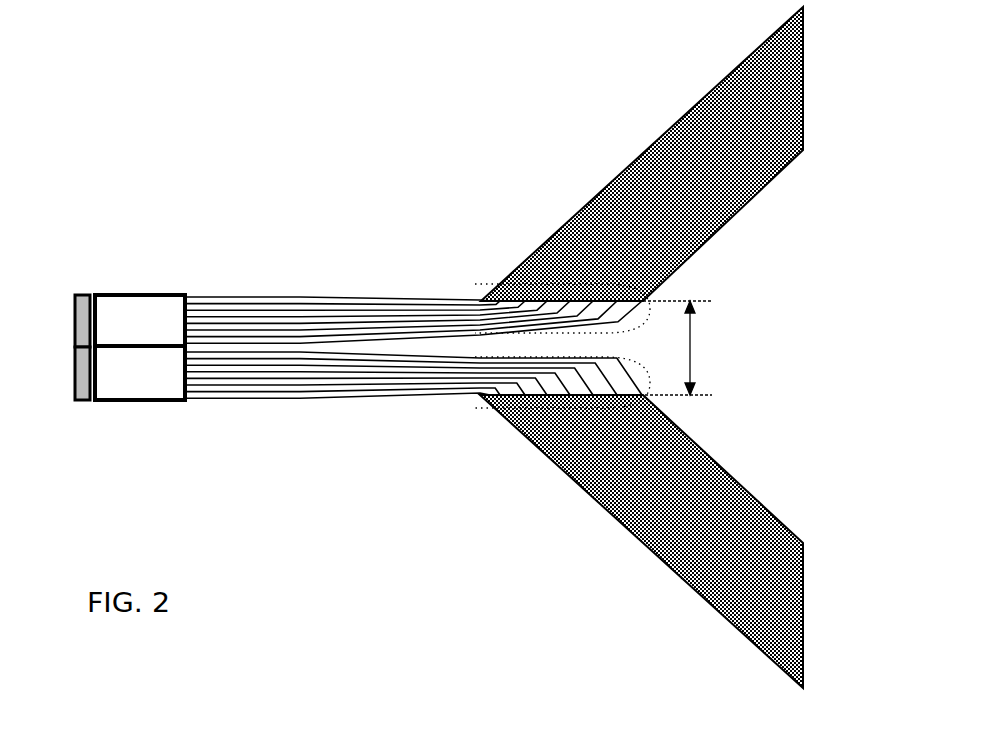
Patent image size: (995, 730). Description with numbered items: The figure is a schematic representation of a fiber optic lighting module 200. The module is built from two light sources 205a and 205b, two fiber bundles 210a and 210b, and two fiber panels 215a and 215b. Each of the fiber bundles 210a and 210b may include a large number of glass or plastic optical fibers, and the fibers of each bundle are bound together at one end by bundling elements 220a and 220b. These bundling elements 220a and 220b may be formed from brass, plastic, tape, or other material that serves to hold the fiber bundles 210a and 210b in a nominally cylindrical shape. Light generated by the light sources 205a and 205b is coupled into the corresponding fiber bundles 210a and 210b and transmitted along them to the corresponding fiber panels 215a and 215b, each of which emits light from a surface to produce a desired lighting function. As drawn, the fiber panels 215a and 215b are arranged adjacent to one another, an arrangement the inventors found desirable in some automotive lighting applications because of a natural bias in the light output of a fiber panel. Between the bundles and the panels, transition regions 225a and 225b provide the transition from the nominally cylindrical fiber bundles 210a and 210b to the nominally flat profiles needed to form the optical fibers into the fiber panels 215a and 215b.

The fiber optic lighting module 200 is at (432, 190).
The light source 205a is at (83, 295).
The light source 205b is at (82, 400).
The fiber bundle 210a is at (320, 295).
The fiber bundle 210b is at (323, 405).
The fiber panel 215a is at (703, 98).
The fiber panel 215b is at (593, 495).
The bundling element 220a is at (140, 295).
The bundling element 220b is at (140, 400).
The transition region 225a is at (484, 298).
The transition region 225b is at (482, 398).